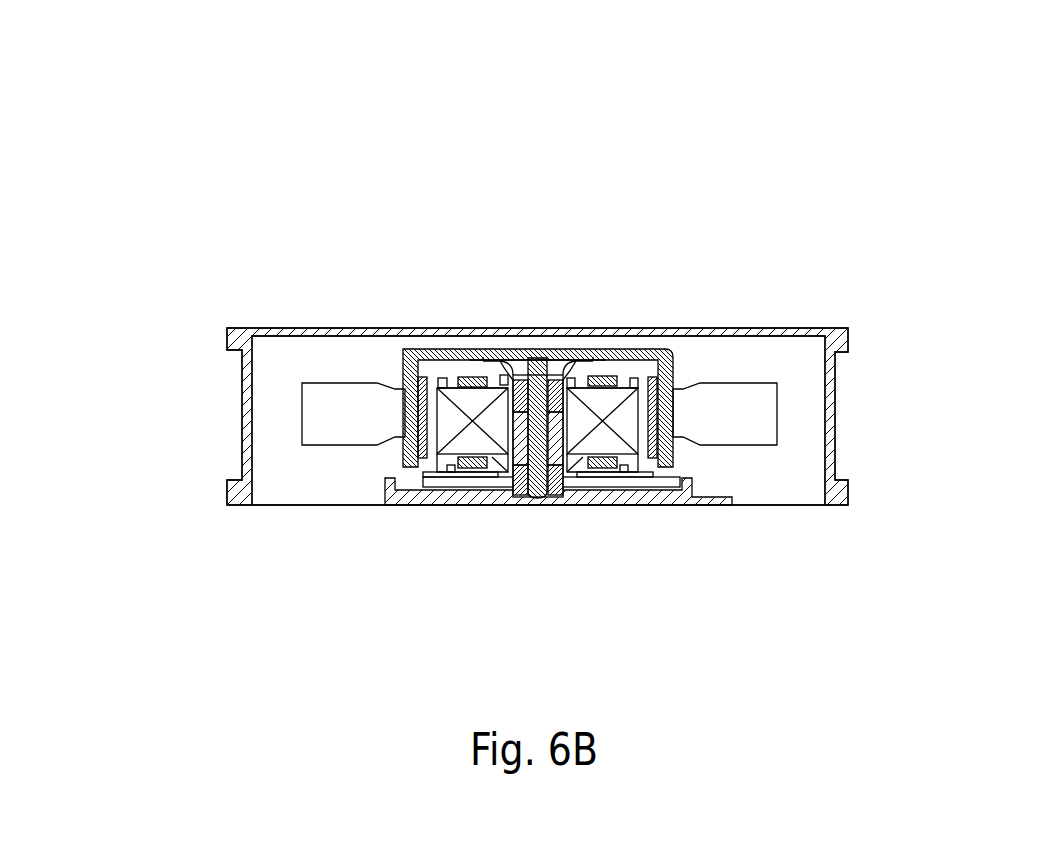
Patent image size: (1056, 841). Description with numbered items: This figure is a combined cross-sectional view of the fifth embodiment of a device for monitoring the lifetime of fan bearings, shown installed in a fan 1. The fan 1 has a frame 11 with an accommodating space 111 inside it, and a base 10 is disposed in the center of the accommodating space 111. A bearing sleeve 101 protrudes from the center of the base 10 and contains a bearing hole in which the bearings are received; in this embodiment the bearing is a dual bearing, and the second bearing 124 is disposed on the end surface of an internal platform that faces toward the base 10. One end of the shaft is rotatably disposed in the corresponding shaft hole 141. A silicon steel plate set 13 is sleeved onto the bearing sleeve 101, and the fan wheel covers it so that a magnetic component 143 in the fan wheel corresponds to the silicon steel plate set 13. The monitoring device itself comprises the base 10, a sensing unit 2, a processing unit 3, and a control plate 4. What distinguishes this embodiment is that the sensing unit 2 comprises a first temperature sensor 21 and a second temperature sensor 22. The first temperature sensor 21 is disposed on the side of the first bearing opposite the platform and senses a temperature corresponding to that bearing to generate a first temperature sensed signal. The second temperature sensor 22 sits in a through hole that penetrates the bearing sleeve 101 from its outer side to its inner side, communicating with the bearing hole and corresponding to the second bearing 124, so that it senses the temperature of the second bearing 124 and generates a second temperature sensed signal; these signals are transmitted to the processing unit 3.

The fan 1 is at (908, 138).
The frame 11 is at (848, 335).
The accommodating space 111 is at (306, 358).
The silicon steel plate set 13 is at (425, 357).
The magnetic component 143 is at (405, 355).
The bearing sleeve 101 is at (484, 358).
The shaft hole 141 is at (548, 357).
The second bearing 124 is at (535, 498).
The base 10 is at (485, 497).
The processing unit 3 is at (440, 478).
The control plate 4 is at (423, 480).
The sensing unit 2 is at (679, 567).
The first temperature sensor 21 is at (583, 357).
The second temperature sensor 22 is at (565, 493).